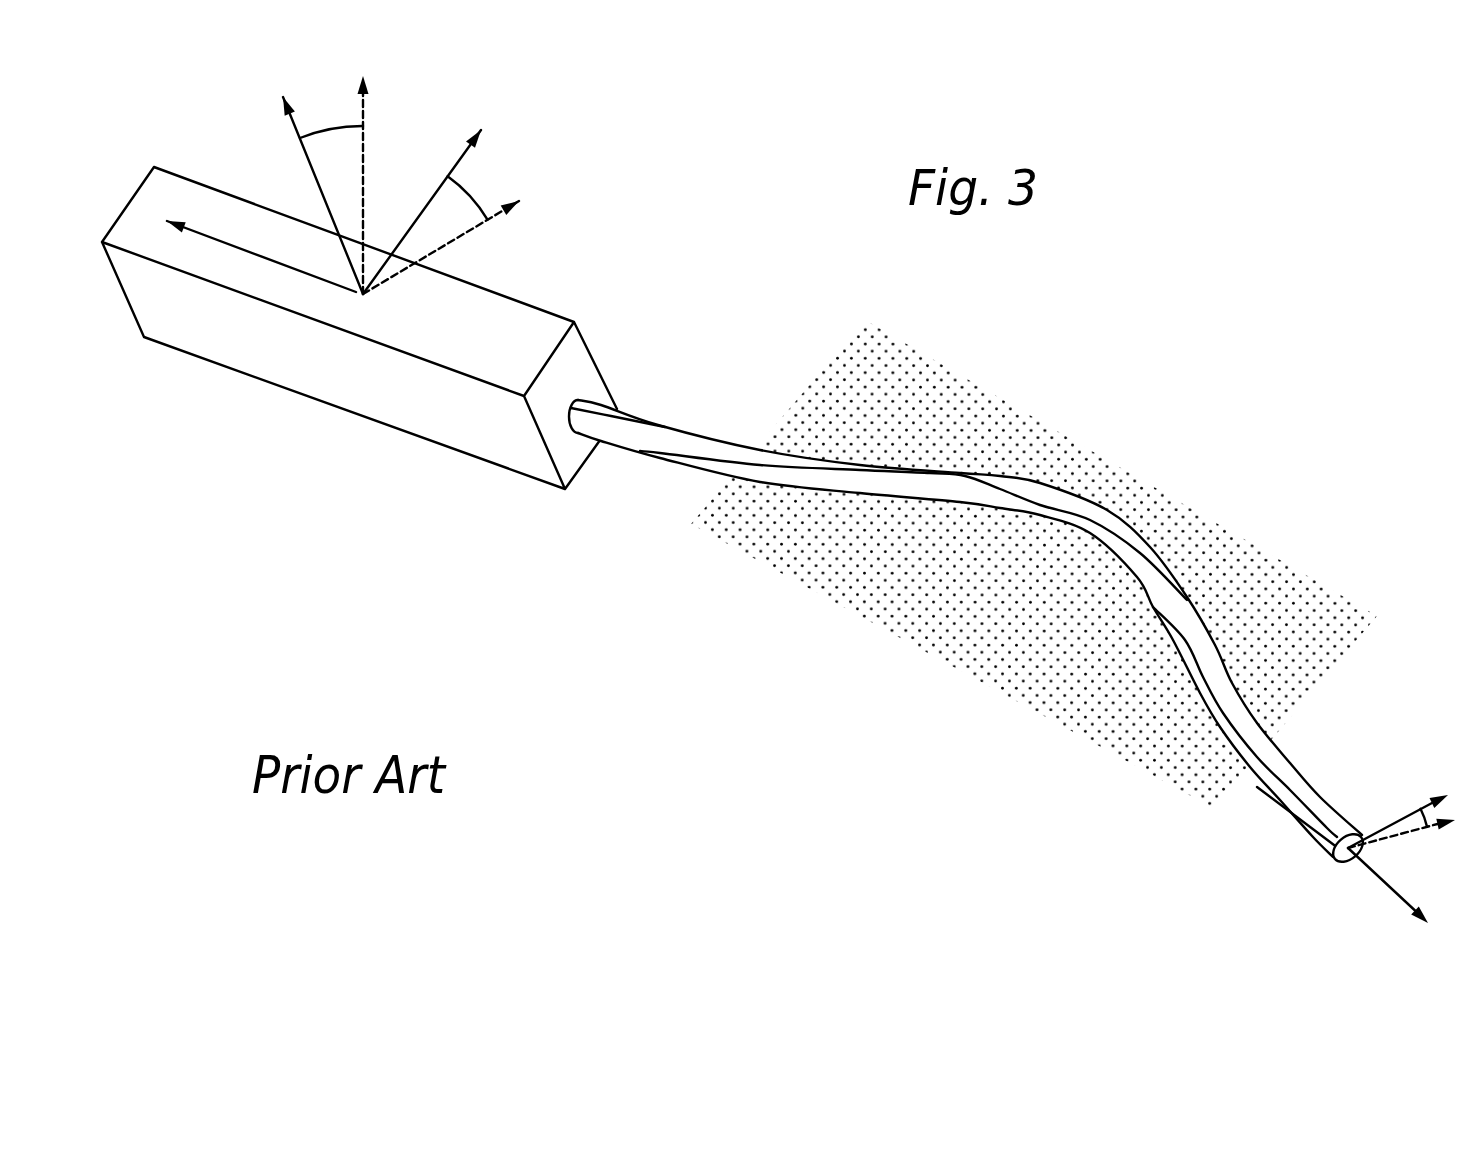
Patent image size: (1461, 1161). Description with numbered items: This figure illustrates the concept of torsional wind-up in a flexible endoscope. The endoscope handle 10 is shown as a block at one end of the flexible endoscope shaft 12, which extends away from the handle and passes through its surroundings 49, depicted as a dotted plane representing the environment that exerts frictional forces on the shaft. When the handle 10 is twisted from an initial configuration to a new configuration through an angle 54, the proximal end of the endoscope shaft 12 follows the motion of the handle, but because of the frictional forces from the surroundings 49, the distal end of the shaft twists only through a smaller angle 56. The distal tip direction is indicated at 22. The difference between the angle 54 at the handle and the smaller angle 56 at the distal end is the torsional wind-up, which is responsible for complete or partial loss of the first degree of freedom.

The endoscope handle 10 is at (376, 414).
The flexible endoscope shaft 12 is at (1138, 573).
The output beam direction 22 is at (1387, 887).
The surroundings 49 is at (1034, 564).
The angle 54 is at (473, 195).
The smaller angle 56 is at (1418, 826).